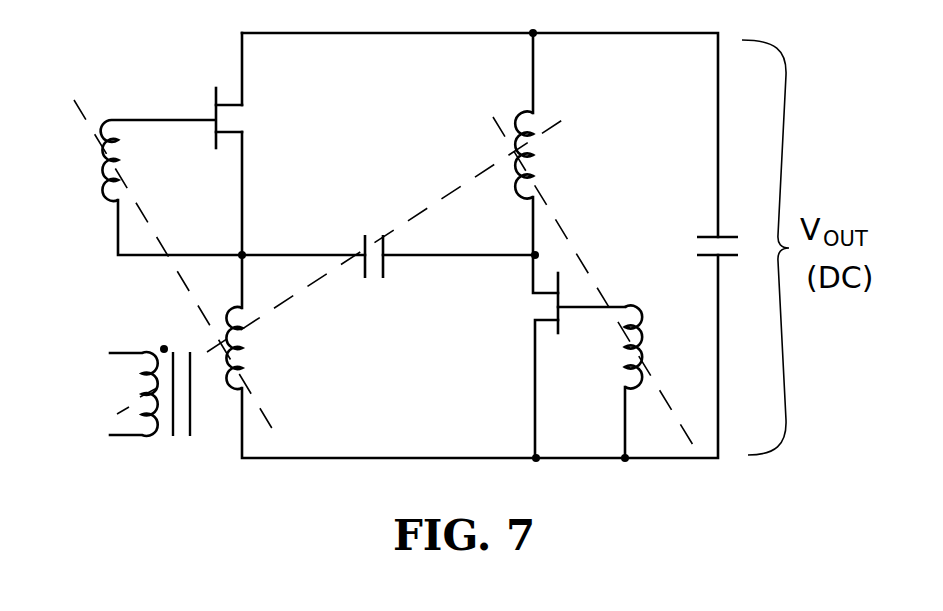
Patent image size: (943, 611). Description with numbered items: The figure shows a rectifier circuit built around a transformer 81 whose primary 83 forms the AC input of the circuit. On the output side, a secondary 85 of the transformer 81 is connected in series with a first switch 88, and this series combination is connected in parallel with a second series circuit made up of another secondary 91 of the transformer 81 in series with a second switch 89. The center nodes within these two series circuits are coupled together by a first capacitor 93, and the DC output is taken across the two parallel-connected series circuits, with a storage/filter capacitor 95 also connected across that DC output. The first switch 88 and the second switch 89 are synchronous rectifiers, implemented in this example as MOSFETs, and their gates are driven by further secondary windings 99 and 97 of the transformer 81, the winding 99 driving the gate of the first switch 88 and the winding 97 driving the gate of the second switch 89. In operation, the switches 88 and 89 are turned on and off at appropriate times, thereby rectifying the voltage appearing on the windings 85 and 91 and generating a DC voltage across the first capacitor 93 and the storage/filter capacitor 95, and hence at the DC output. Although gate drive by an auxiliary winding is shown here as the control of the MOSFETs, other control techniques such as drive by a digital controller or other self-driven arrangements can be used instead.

The transformer 81 is at (197, 487).
The primary 83 is at (118, 351).
The secondary 85 is at (239, 350).
The switch SW1 88 is at (214, 101).
The switch SW2 89 is at (560, 325).
The secondary 91 is at (520, 116).
The capacitor C1 93 is at (362, 243).
The storage/filter capacitor C2 95 is at (727, 232).
The secondary winding 97 is at (645, 307).
The secondary winding 99 is at (100, 164).